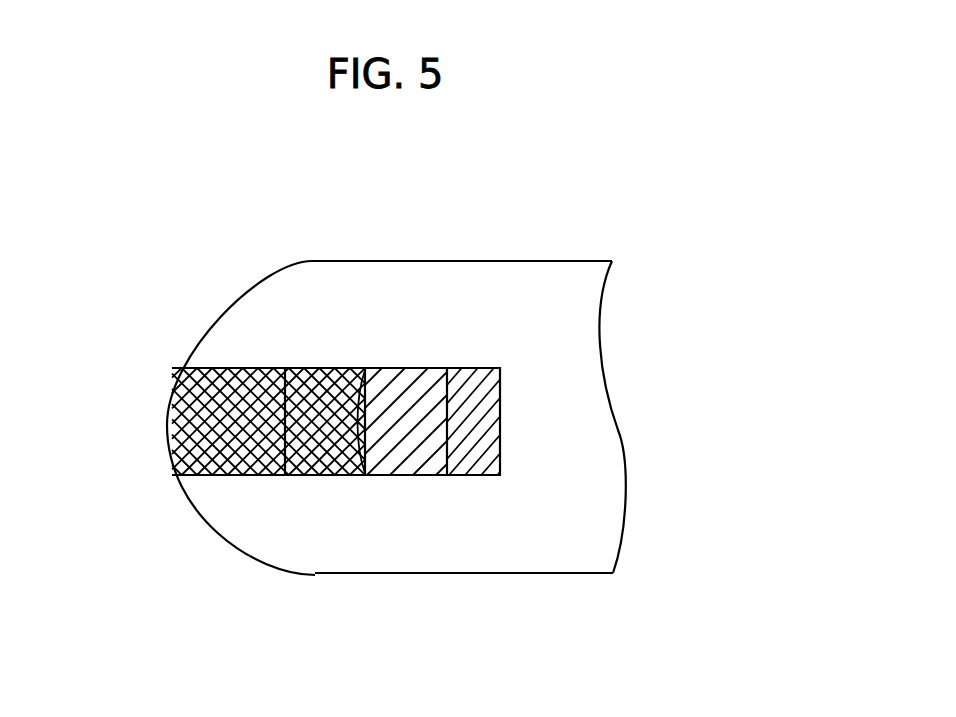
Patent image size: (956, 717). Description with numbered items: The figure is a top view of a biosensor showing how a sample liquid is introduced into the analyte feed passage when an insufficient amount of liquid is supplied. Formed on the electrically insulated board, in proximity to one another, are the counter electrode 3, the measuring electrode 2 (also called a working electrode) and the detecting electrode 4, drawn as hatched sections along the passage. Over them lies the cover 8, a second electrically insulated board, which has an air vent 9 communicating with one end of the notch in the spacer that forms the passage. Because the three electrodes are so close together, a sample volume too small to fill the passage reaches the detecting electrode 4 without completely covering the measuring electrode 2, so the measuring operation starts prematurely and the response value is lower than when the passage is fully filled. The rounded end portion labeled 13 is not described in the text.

The measuring electrode 2 is at (331, 368).
The counter electrode 3 is at (211, 370).
The detecting electrode 4 is at (415, 476).
The cover 8 is at (554, 283).
The air vent 9 is at (482, 368).
The rounded tip 13 is at (168, 423).